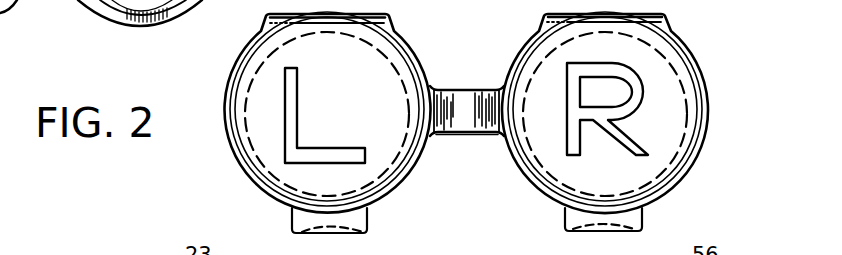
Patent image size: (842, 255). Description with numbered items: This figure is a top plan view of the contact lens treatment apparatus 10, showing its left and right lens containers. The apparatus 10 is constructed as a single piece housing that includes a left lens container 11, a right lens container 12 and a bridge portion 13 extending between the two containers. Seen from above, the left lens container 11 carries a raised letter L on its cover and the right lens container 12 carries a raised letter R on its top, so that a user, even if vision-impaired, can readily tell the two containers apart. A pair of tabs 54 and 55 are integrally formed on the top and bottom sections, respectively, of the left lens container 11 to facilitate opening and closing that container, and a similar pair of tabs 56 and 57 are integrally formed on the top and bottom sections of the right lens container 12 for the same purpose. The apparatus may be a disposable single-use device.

The lens treatment apparatus 10 is at (224, 168).
The left lens container 11 is at (258, 99).
The right lens container 12 is at (665, 92).
The bridge portion 13 is at (461, 100).
The tab 54 is at (355, 219).
The tab 55 is at (302, 240).
The tab 56 is at (643, 220).
The tab 57 is at (589, 227).